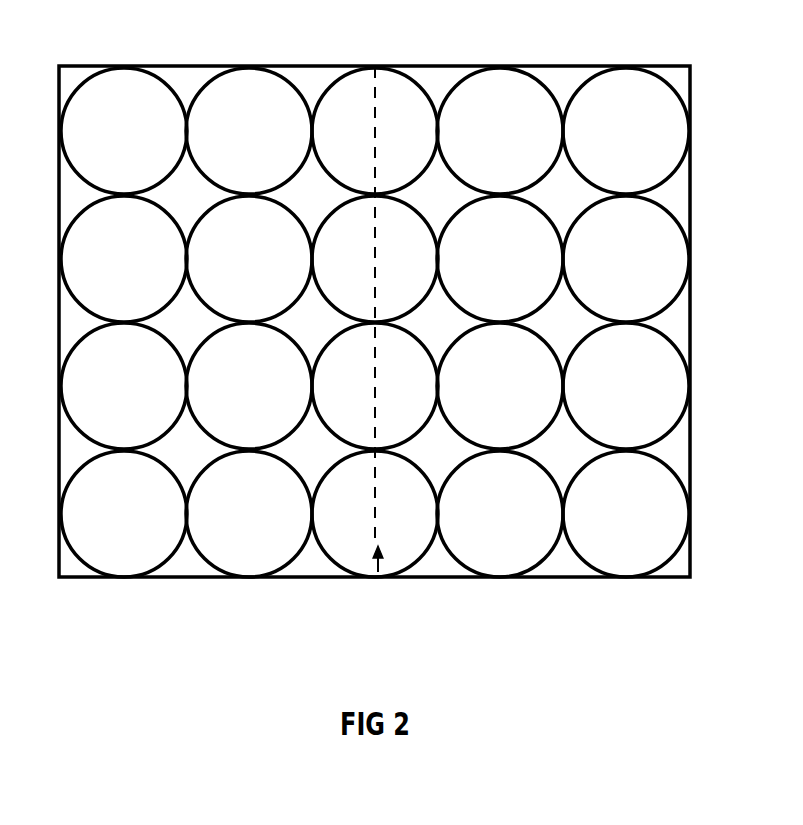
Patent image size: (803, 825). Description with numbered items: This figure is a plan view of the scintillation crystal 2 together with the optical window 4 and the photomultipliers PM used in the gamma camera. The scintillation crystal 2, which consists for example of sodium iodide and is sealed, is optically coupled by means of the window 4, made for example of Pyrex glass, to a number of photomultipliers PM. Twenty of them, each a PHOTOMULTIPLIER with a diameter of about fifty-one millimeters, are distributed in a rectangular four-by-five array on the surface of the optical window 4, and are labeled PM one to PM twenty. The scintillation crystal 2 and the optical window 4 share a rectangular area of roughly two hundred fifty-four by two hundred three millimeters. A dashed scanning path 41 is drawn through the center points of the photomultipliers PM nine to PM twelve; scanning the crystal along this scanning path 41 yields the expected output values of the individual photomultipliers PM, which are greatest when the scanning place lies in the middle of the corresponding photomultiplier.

The photomultipliers PM is at (528, 52).
The scintillation crystal 2 is at (403, 321).
The optical window 4 is at (680, 448).
The scanning path 41 is at (378, 537).
The photomultiplier PHOTOMULTIPLIER is at (132, 107).